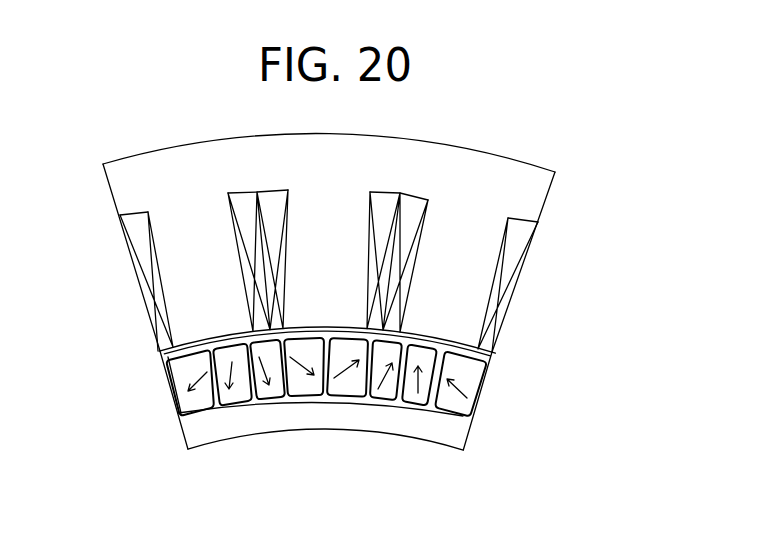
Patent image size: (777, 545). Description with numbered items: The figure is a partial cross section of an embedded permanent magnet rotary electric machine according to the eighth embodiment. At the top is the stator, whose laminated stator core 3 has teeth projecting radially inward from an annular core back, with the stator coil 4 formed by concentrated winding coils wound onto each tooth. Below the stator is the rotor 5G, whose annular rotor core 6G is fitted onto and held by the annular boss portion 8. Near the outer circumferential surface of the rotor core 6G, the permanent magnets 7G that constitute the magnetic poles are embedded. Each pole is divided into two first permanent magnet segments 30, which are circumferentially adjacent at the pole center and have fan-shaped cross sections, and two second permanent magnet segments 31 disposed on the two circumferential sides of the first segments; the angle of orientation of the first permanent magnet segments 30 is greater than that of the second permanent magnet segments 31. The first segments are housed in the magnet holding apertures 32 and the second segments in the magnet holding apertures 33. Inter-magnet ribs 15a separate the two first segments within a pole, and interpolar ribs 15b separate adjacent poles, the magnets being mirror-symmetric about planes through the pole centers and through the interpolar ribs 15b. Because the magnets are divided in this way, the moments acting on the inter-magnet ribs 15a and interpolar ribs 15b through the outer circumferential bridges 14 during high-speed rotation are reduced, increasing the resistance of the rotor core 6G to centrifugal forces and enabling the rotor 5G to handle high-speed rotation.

The stator core 3 is at (553, 200).
The stator coil 4 is at (525, 257).
The outer circumferential bridges 14 is at (478, 340).
The inter-magnet ribs 15a is at (442, 368).
The interpolar ribs 15b is at (333, 395).
The rotor 5G is at (482, 418).
The rotor core 6G is at (182, 415).
The permanent magnets 7G is at (325, 466).
The boss portion 8 is at (186, 438).
The first permanent magnet segments 30 is at (238, 406).
The second permanent magnet segments 31 is at (200, 414).
The magnet holding apertures 32 is at (218, 364).
The magnet holding apertures 33 is at (174, 388).